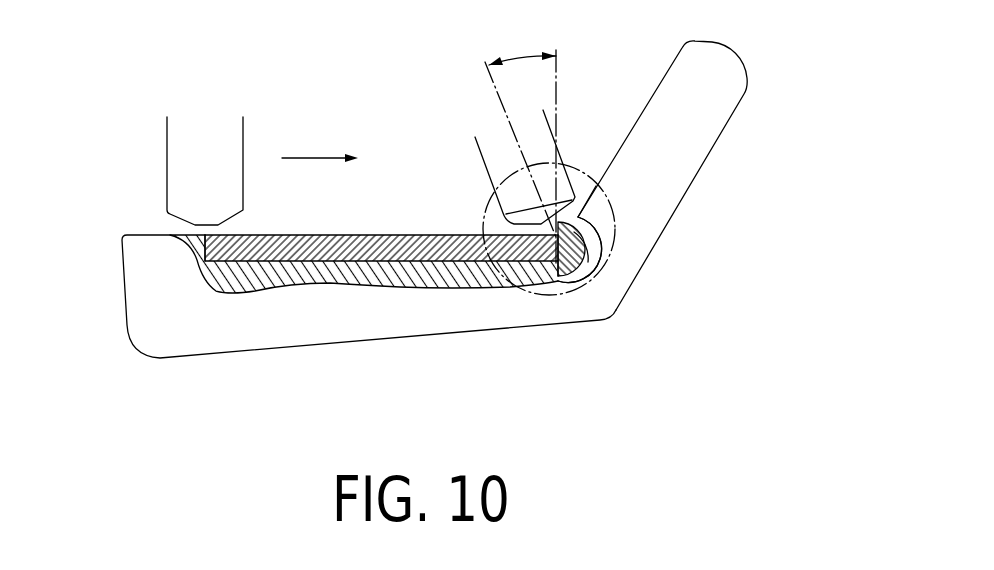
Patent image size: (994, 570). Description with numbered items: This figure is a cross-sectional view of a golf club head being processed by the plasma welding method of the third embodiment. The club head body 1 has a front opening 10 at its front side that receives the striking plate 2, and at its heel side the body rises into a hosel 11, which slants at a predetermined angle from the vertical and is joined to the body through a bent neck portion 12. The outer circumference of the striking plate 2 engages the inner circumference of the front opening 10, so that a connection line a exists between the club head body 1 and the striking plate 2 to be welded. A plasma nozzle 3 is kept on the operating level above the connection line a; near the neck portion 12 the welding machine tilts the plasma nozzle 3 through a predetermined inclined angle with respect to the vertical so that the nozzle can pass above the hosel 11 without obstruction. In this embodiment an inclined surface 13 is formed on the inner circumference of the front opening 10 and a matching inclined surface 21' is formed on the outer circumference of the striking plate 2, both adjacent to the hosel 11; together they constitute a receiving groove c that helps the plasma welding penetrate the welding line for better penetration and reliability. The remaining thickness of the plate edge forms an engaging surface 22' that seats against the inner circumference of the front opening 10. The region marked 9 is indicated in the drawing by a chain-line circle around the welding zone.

The club head body 1 is at (342, 332).
The striking plate 2 is at (428, 237).
The plasma nozzle 3 is at (173, 150).
The enlarged region 9 is at (614, 237).
The front opening 10 is at (282, 265).
The hosel 11 is at (705, 125).
The neck portion 12 is at (584, 222).
The inclined surface 13 is at (600, 243).
The inclined surface 21' is at (526, 337).
The engaging surface 22' is at (587, 316).
The connection line a is at (203, 235).
The receiving groove c is at (575, 240).